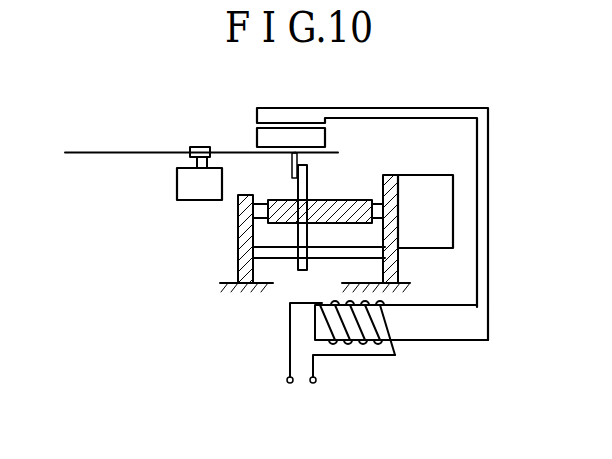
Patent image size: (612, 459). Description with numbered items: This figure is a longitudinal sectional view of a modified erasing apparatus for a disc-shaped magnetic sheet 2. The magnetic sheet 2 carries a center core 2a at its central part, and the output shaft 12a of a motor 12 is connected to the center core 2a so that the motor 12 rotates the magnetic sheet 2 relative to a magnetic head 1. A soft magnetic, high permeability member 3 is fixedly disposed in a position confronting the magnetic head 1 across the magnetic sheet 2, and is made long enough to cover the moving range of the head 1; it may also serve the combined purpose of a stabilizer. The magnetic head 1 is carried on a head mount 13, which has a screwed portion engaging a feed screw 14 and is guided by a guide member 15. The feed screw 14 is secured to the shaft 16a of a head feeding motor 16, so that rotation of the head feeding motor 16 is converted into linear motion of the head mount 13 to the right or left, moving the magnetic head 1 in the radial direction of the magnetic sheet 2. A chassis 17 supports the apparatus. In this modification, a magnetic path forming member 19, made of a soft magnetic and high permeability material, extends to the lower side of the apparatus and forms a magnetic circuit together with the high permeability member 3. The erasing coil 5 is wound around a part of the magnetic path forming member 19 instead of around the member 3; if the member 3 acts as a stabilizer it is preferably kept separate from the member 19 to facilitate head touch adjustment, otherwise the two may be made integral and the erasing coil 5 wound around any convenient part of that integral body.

The magnetic head 1 is at (303, 158).
The magnetic sheet 2 is at (102, 156).
The center core 2a is at (200, 146).
The high permeability member 3 is at (256, 140).
The erasing coil 5 is at (357, 330).
The motor 12 is at (193, 201).
The output shaft 12a is at (194, 160).
The head mount 13 is at (308, 188).
The feed screw 14 is at (355, 200).
The guide member 15 is at (337, 255).
The head feeding motor 16 is at (433, 175).
The shaft 16a is at (375, 200).
The chassis 17 is at (227, 283).
The magnetic path forming member 19 is at (313, 109).